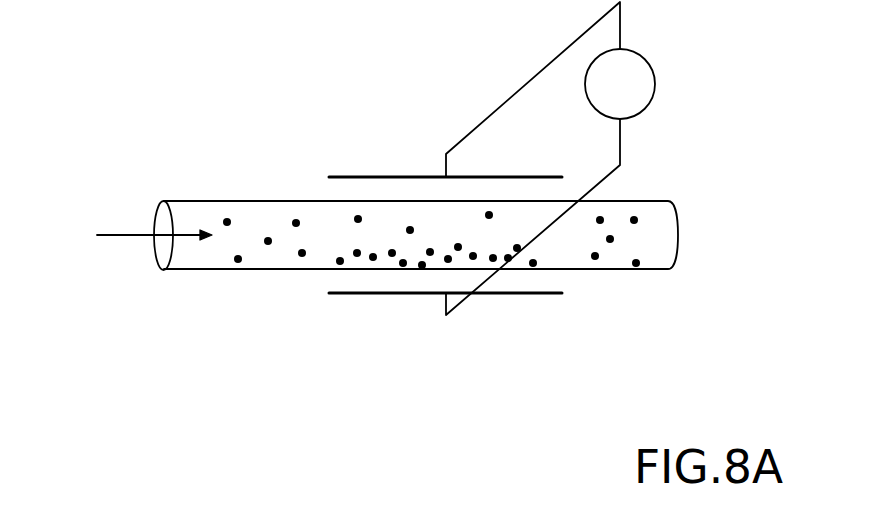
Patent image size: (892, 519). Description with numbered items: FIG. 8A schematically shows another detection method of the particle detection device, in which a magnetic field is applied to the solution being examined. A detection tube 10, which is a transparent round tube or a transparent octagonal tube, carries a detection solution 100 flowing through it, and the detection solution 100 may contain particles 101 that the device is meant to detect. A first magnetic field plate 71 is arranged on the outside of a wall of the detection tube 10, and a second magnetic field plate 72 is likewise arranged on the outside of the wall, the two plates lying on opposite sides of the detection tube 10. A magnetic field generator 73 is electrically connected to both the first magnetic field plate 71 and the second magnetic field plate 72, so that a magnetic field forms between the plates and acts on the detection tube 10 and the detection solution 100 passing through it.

The detection tube 10 is at (618, 201).
The detection solution 100 is at (203, 223).
The particles 101 is at (296, 220).
The first magnetic field plate 71 is at (408, 177).
The second magnetic field plate 72 is at (528, 293).
The magnetic field generator 73 is at (654, 75).